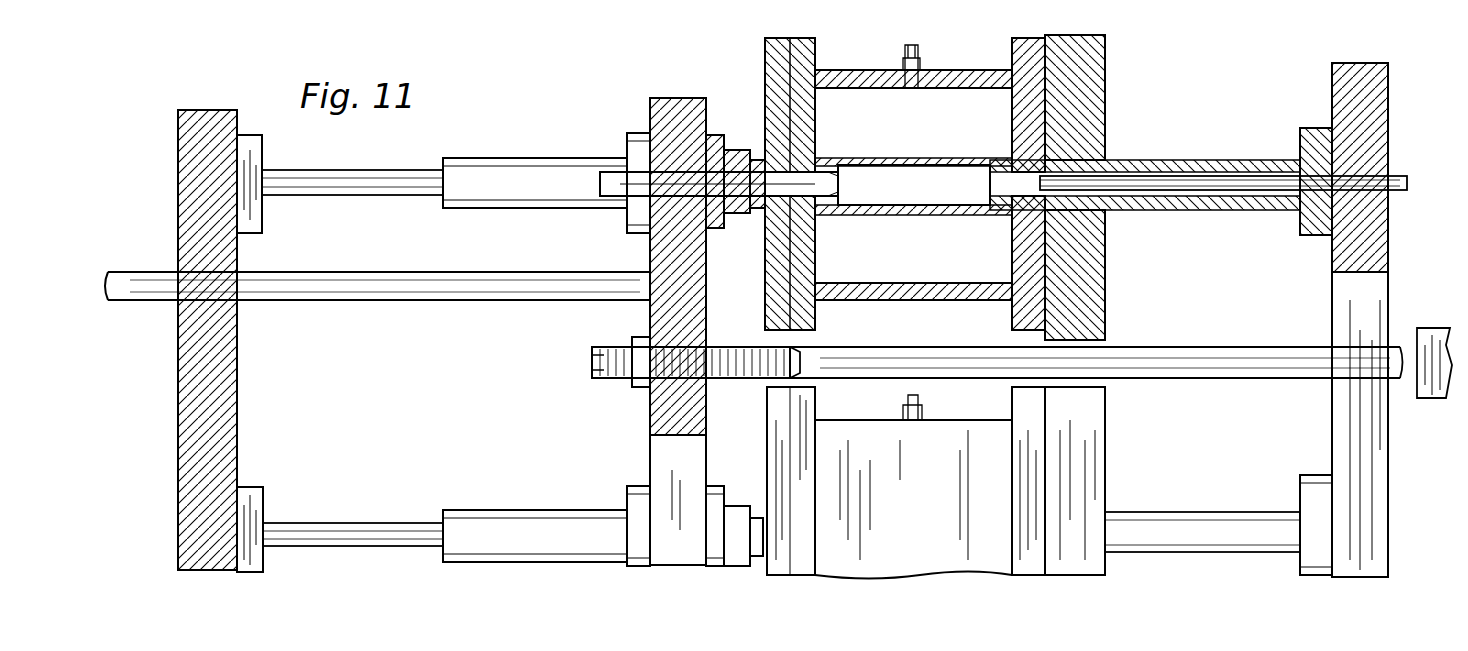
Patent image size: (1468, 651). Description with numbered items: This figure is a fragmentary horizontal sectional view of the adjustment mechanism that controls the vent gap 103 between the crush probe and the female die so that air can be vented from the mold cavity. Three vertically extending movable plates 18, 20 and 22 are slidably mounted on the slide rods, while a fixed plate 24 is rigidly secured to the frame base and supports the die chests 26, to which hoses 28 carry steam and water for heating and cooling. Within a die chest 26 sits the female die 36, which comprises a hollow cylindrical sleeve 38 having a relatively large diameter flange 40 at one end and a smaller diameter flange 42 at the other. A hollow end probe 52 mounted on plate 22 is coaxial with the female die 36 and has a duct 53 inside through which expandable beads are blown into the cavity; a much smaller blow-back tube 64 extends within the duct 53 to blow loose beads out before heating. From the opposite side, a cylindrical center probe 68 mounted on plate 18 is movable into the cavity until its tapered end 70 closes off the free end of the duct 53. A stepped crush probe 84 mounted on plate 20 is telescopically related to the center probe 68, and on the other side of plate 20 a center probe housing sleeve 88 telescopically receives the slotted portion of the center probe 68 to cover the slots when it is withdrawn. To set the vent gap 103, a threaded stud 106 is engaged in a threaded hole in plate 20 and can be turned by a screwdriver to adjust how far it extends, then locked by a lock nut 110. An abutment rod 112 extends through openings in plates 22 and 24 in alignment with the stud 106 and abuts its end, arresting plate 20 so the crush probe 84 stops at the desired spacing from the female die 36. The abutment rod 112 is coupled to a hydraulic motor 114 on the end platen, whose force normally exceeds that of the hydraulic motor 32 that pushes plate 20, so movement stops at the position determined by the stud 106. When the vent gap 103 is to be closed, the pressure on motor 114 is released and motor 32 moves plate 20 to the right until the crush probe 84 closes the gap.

The movable plate 18 is at (212, 128).
The movable plate 20 is at (658, 110).
The movable plate 22 is at (1352, 80).
The fixed plate 24 is at (1075, 258).
The die chest 26 is at (872, 398).
The hose 28 is at (920, 66).
The hydraulic motor 32 is at (406, 307).
The female die 36 is at (860, 142).
The hollow cylindrical sleeve 38 is at (958, 158).
The flange 40 is at (790, 236).
The flange 42 is at (1032, 150).
The end probe 52 is at (1180, 175).
The duct 53 is at (1148, 198).
The blow-back tube 64 is at (1258, 188).
The center probe 68 is at (348, 183).
The tapered end 70 is at (840, 186).
The crush probe 84 is at (714, 138).
The center probe housing sleeve 88 is at (518, 170).
The vent gap 103 is at (758, 158).
The threaded stud 106 is at (728, 345).
The lock nut 110 is at (636, 388).
The abutment rod 112 is at (1168, 355).
The hydraulic motor 114 is at (1438, 340).